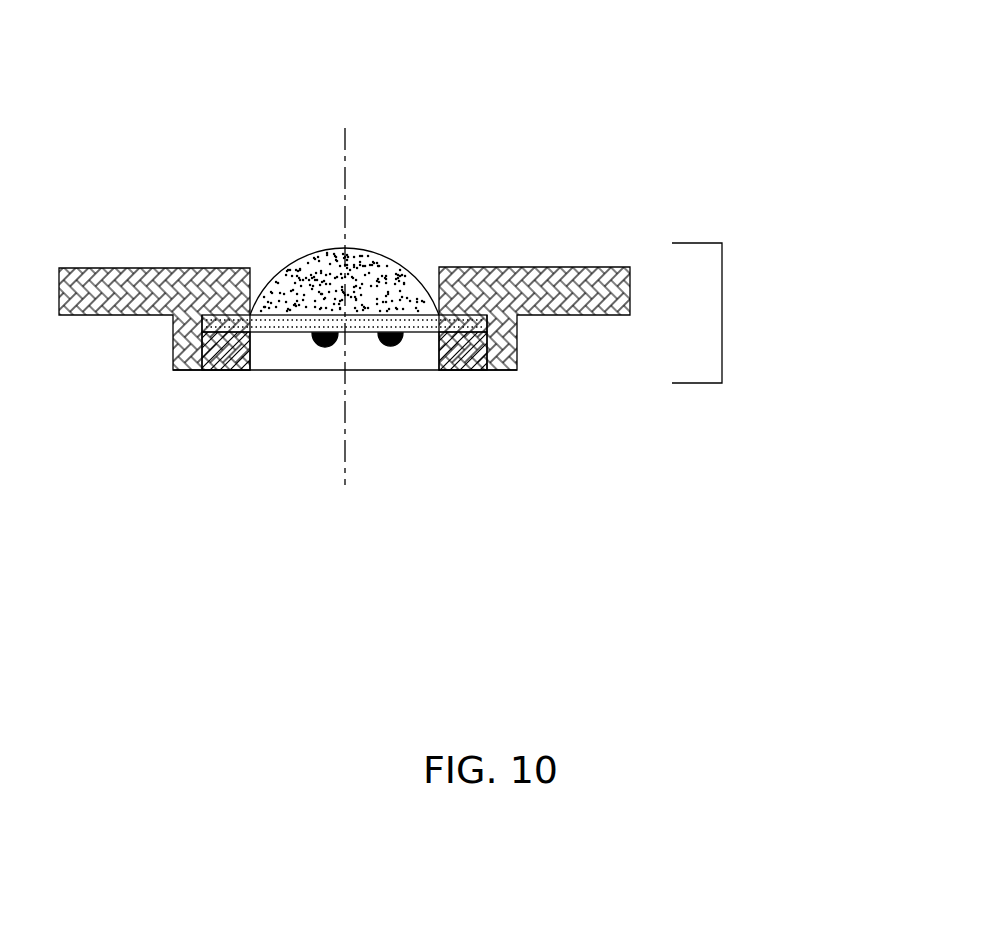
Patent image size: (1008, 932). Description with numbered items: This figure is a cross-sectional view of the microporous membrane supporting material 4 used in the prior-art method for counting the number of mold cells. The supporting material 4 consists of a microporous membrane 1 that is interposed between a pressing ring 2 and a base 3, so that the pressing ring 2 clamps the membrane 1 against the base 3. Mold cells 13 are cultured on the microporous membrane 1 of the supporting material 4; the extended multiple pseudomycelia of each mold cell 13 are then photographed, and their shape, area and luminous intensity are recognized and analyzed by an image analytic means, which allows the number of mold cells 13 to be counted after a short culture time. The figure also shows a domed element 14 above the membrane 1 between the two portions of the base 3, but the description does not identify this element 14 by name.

The first electrode block 1 is at (222, 340).
The second electrode block 2 is at (465, 348).
The housing 3 is at (168, 268).
The light emitting device assembly 4 is at (722, 315).
The solder bump 13 is at (397, 343).
The lens 14 is at (388, 257).